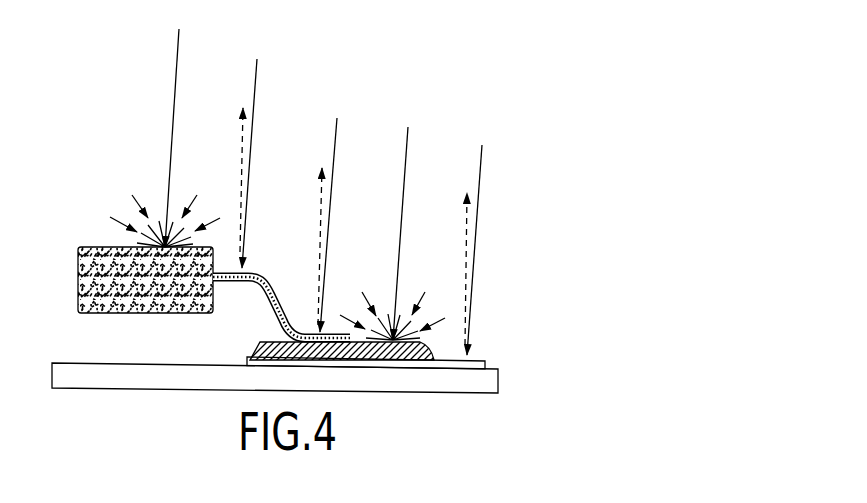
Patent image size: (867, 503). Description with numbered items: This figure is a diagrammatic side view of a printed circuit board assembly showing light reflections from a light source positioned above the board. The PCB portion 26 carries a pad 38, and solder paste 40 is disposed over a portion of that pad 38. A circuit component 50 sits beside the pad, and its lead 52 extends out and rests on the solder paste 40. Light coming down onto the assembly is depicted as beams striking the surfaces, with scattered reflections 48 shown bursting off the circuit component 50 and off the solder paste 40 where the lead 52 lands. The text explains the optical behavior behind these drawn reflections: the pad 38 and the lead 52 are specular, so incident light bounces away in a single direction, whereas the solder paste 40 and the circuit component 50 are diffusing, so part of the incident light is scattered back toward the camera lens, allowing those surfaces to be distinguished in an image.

The PCB portion 26 is at (527, 382).
The pad 38 is at (497, 368).
The solder paste 40 is at (251, 344).
The laser energy 48 is at (158, 215).
The circuit component 50 is at (100, 248).
The lead 52 is at (264, 285).